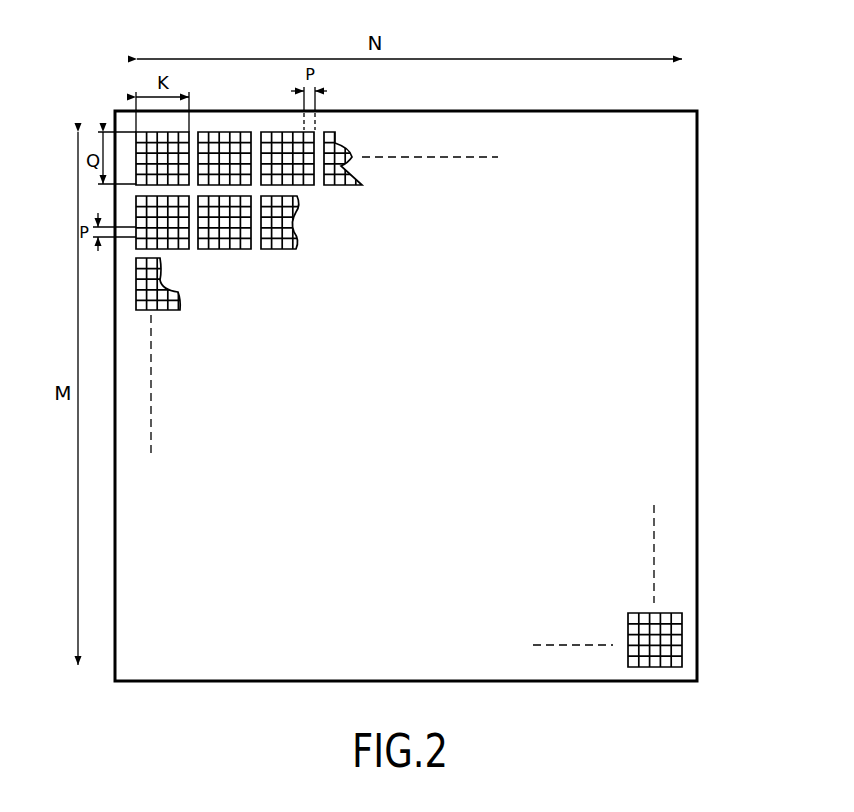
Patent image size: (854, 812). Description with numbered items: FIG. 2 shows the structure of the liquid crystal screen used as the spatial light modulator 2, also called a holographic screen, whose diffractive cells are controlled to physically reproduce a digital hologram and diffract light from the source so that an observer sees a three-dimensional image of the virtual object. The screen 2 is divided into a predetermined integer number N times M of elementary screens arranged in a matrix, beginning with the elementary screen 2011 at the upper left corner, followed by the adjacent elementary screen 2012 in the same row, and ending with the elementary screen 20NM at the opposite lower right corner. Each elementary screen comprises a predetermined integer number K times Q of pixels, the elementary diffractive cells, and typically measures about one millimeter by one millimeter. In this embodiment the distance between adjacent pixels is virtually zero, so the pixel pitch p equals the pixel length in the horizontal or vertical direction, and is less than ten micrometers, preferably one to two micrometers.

The spatial light modulator 2 is at (678, 378).
The elementary screen 2011 is at (148, 142).
The elementary screen 2012 is at (217, 147).
The elementary screen 20NM is at (677, 628).